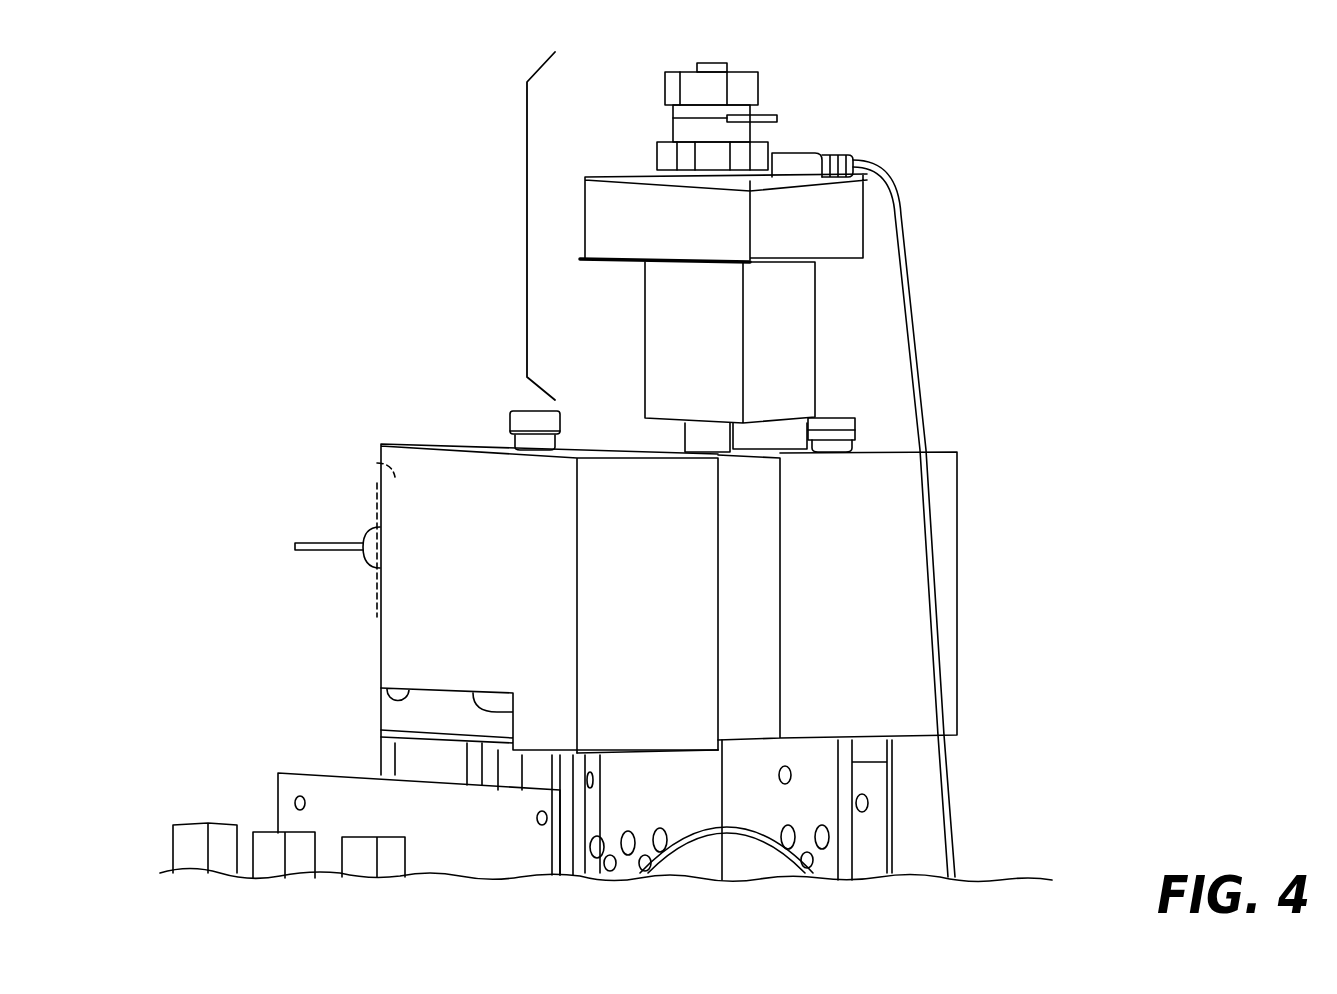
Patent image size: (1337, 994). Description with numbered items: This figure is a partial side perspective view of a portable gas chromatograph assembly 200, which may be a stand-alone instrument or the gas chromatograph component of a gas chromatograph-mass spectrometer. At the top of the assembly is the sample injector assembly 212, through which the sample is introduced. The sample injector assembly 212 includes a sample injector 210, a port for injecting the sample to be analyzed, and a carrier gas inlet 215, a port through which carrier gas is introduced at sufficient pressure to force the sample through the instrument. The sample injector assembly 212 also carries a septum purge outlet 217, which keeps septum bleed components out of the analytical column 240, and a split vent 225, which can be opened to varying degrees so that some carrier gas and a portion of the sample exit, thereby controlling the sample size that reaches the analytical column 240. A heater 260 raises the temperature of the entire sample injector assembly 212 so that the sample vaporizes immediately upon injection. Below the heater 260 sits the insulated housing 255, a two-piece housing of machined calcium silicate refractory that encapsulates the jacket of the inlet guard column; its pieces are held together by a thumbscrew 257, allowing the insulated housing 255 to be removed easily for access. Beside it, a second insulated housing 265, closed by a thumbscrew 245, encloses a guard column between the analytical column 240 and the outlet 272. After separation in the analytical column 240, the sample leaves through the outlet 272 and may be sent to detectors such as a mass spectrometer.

The gas chromatograph assembly 200 is at (481, 161).
The sample injector 210 is at (663, 72).
The sample injector assembly 212 is at (527, 250).
The carrier gas inlet 215 is at (765, 118).
The septum purge outlet 217 is at (680, 127).
The split vent 225 is at (850, 156).
The analytical column 240 is at (893, 857).
The thumbscrew 245 is at (510, 427).
The insulated housing 255 is at (947, 500).
The thumbscrew 257 is at (847, 417).
The heater 260 is at (655, 328).
The insulated housing 265 is at (393, 477).
The outlet 272 is at (297, 545).